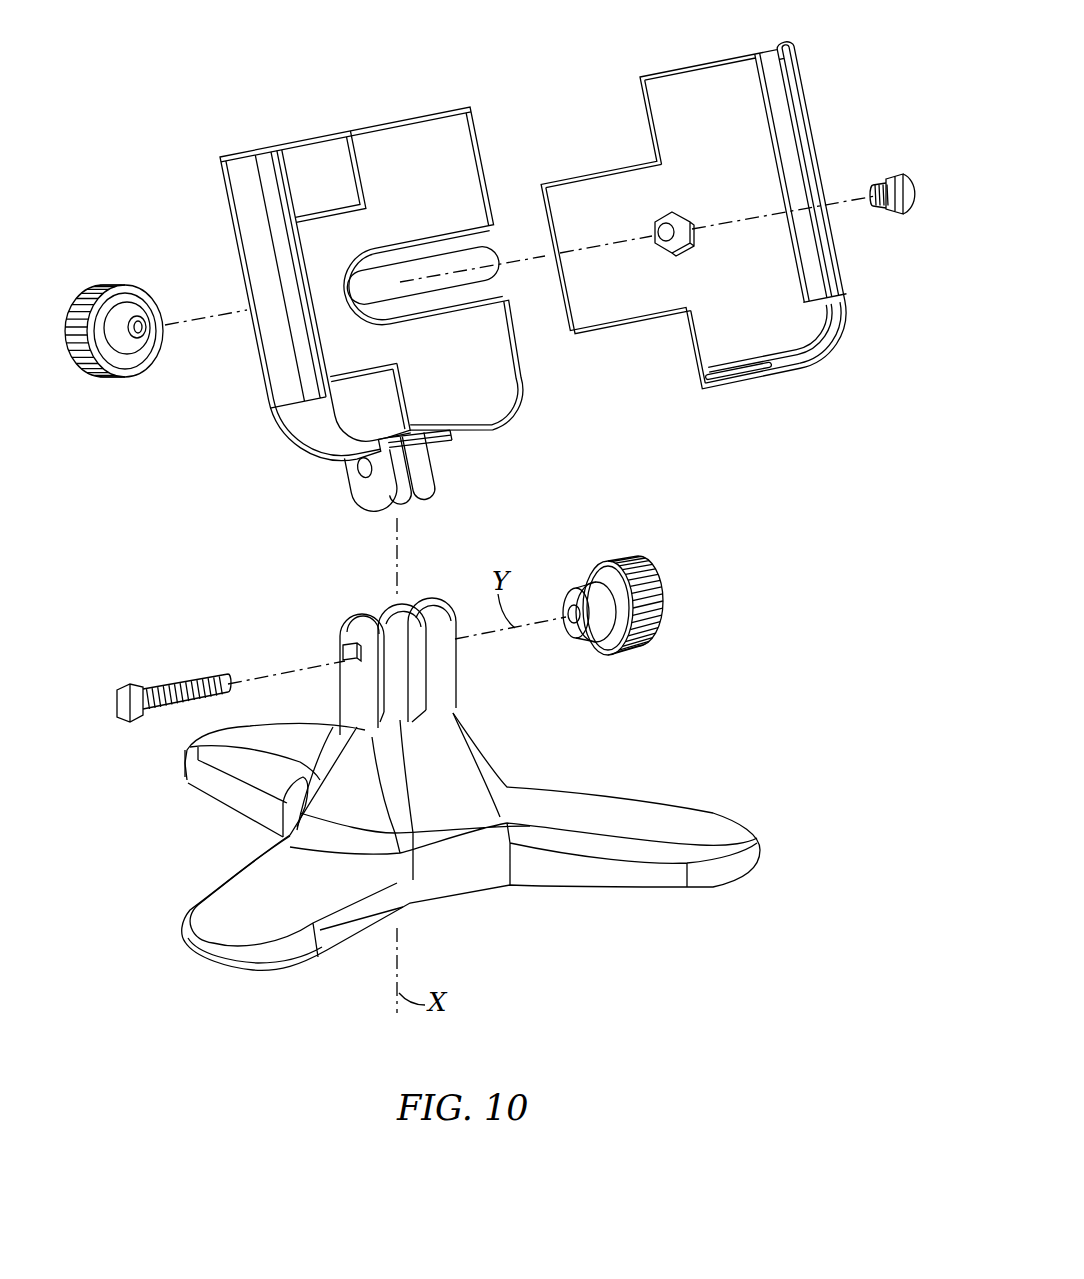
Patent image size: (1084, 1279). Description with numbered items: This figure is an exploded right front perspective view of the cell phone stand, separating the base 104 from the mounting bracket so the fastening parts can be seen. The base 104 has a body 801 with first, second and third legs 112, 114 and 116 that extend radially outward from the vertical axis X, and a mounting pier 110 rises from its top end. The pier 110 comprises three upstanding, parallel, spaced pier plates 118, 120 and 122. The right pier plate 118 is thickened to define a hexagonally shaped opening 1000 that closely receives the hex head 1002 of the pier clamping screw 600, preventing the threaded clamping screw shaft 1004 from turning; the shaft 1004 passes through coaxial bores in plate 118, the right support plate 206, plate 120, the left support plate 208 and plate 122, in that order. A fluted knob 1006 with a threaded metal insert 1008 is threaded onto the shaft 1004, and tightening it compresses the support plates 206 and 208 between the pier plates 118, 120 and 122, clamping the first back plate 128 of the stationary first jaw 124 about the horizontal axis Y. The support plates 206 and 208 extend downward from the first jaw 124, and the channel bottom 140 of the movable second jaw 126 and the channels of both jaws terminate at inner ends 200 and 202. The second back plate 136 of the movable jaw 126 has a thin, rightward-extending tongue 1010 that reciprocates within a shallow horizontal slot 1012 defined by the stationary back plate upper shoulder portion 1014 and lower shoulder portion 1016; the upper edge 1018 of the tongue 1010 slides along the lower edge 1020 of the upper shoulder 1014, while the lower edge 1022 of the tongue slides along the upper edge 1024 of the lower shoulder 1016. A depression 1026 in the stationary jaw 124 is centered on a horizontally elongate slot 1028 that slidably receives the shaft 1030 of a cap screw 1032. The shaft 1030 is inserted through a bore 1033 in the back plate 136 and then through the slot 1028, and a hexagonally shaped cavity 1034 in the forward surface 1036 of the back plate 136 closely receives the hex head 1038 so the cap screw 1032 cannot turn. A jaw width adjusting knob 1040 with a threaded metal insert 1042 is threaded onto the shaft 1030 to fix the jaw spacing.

The base 104 is at (619, 781).
The mounting pier 110 is at (478, 659).
The first leg 112 is at (668, 812).
The second leg 114 is at (245, 770).
The third leg 116 is at (235, 910).
The right pier plate 118 is at (350, 702).
The pier plate 120 is at (428, 712).
The pier plate 122 is at (455, 688).
The first jaw 124 is at (376, 290).
The second jaw 126 is at (689, 226).
The first back plate 128 is at (377, 293).
The second back plate 136 is at (751, 214).
The channel bottom 140 is at (748, 208).
The inner end 200 is at (419, 438).
The inner end 202 is at (738, 371).
The right support plate 206 is at (372, 482).
The left support plate 208 is at (408, 469).
The pier clamping screw 600 is at (160, 649).
The body 801 is at (467, 863).
The hexagonally shaped opening 1000 is at (345, 652).
The hex head 1002 is at (124, 710).
The threaded clamping screw shaft 1004 is at (200, 678).
The fluted knob 1006 is at (652, 584).
The threaded metal insert 1008 is at (572, 608).
The tongue 1010 is at (618, 248).
The horizontal slot 1012 is at (316, 297).
The upper shoulder portion 1014 is at (323, 176).
The lower shoulder portion 1016 is at (401, 397).
The upper edge 1018 is at (604, 175).
The lower edge 1020 is at (321, 177).
The lower edge 1022 is at (752, 373).
The upper edge 1024 is at (364, 372).
The depression 1026 is at (477, 169).
The slot 1028 is at (423, 276).
The shaft 1030 is at (887, 212).
The cap screw 1032 is at (922, 164).
The bore 1033 is at (668, 243).
The hexagonally shaped cavity 1034 is at (686, 222).
The forward surface 1036 is at (709, 111).
The hex head 1038 is at (913, 200).
The jaw width adjusting knob 1040 is at (98, 290).
The threaded metal insert 1042 is at (147, 330).